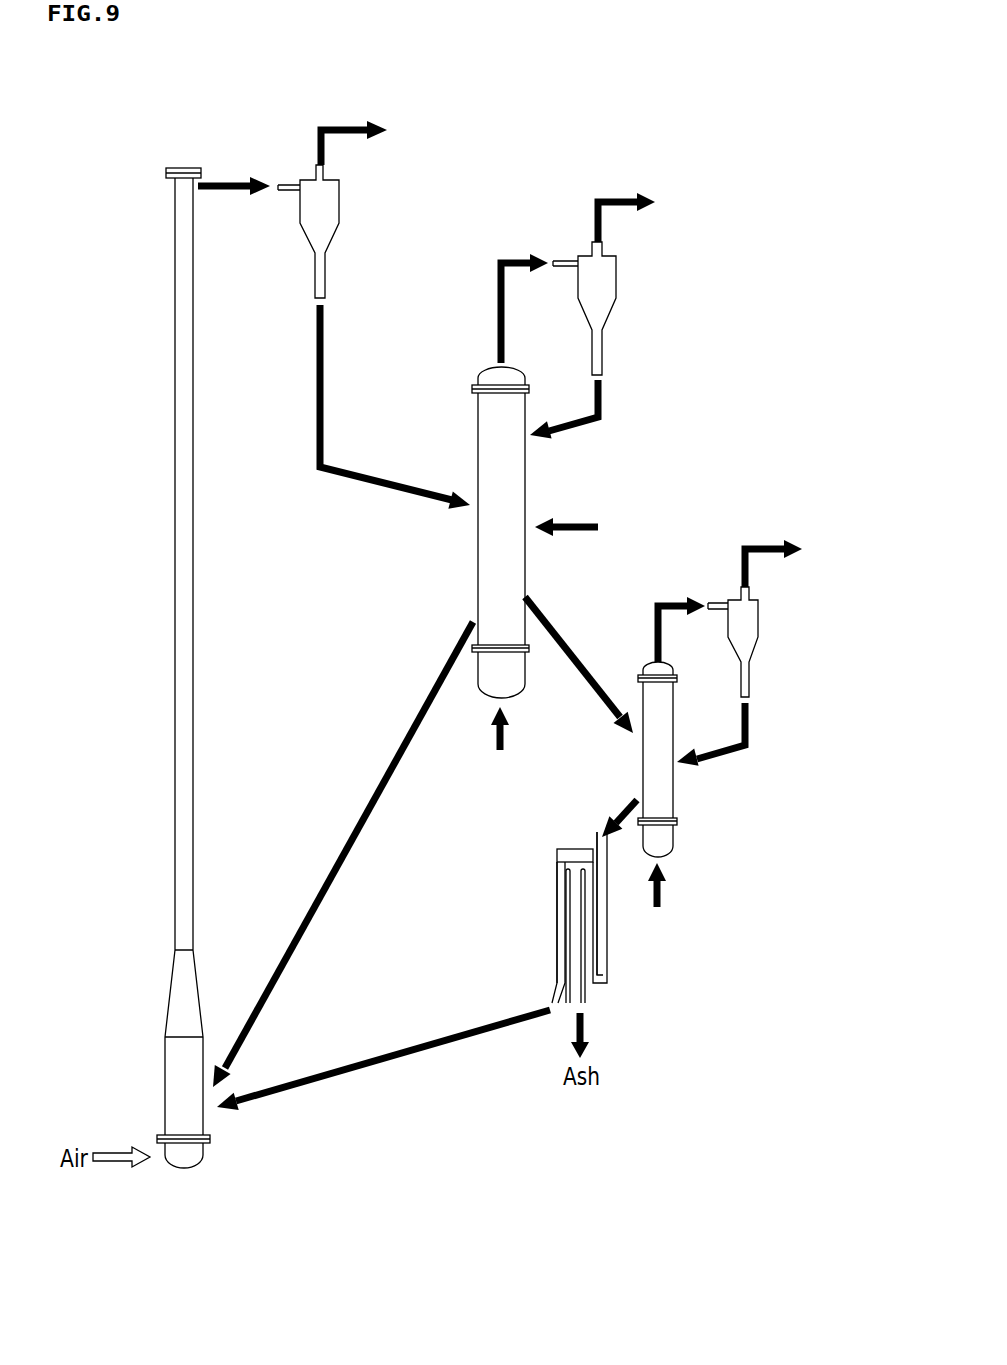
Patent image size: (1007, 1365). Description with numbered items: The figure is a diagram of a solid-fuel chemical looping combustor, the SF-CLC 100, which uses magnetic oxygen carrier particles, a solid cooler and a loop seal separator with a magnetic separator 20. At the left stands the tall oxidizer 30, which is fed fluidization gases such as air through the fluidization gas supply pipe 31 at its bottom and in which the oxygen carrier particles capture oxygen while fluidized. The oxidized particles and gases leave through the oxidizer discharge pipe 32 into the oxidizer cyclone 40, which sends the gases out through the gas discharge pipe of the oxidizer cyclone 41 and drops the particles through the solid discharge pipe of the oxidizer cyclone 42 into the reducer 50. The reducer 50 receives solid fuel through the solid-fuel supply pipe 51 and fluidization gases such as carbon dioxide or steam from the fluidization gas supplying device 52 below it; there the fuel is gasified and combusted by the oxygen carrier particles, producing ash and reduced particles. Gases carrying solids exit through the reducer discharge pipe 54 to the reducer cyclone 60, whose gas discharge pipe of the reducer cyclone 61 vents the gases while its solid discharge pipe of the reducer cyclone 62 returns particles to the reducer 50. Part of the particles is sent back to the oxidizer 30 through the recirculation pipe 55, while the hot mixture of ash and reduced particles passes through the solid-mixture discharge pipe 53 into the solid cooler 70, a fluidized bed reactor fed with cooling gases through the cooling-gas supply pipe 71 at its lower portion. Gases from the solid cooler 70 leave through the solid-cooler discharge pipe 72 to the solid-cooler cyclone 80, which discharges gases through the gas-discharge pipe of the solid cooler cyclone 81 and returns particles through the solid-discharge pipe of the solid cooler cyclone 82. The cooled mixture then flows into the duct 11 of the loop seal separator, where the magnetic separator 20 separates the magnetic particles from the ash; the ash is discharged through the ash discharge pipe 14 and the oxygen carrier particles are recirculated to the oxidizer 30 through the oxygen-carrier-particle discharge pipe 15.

The SF-CLC 100 is at (508, 128).
The oxidizer 30 is at (175, 845).
The fluidization gas supply pipe 31 is at (163, 1153).
The oxidizer discharge pipe 32 is at (228, 182).
The oxidizer cyclone 40 is at (340, 201).
The gas discharge pipe of the oxidizer cyclone 41 is at (350, 127).
The solid discharge pipe of the oxidizer cyclone 42 is at (323, 352).
The reducer 50 is at (527, 487).
The solid-fuel supply pipe 51 is at (600, 527).
The fluidization gas supplying device 52 is at (500, 752).
The solid-mixture discharge pipe 53 is at (560, 632).
The reducer discharge pipe 54 is at (510, 262).
The recirculation pipe 55 is at (392, 767).
The reducer cyclone 60 is at (617, 276).
The gas discharge pipe of the reducer cyclone 61 is at (620, 200).
The solid discharge pipe of the reducer cyclone 62 is at (602, 405).
The solid cooler 70 is at (675, 800).
The cooling-gas supply pipe 71 is at (662, 897).
The solid-cooler discharge pipe 72 is at (675, 602).
The solid-cooler cyclone 80 is at (760, 615).
The gas-discharge pipe of the solid cooler cyclone 81 is at (775, 547).
The solid-discharge pipe of the solid cooler cyclone 82 is at (750, 730).
The magnetic separator 20 is at (550, 890).
The duct 11 is at (602, 890).
The ash discharge pipe 14 is at (573, 965).
The oxygen-carrier-particle discharge pipe 15 is at (562, 935).